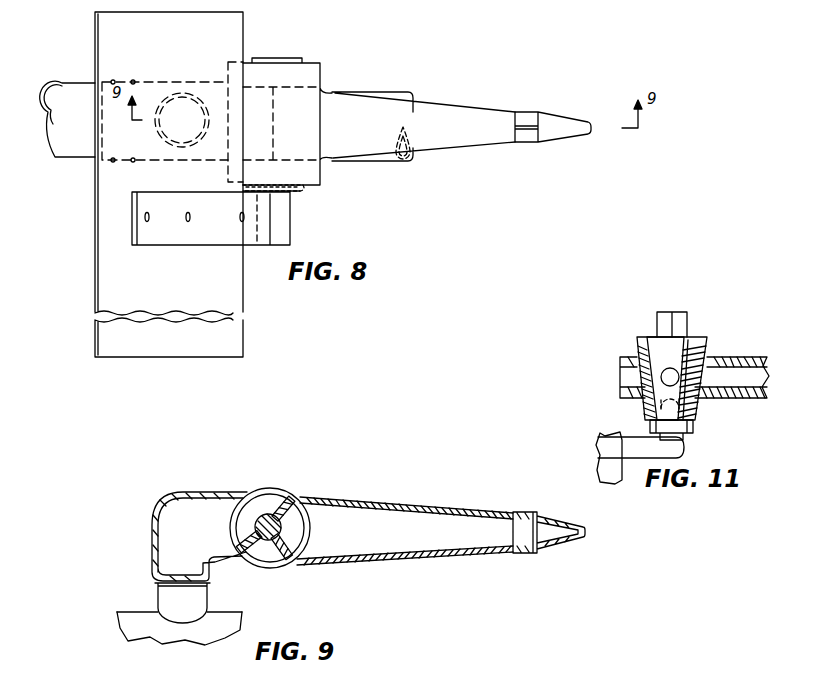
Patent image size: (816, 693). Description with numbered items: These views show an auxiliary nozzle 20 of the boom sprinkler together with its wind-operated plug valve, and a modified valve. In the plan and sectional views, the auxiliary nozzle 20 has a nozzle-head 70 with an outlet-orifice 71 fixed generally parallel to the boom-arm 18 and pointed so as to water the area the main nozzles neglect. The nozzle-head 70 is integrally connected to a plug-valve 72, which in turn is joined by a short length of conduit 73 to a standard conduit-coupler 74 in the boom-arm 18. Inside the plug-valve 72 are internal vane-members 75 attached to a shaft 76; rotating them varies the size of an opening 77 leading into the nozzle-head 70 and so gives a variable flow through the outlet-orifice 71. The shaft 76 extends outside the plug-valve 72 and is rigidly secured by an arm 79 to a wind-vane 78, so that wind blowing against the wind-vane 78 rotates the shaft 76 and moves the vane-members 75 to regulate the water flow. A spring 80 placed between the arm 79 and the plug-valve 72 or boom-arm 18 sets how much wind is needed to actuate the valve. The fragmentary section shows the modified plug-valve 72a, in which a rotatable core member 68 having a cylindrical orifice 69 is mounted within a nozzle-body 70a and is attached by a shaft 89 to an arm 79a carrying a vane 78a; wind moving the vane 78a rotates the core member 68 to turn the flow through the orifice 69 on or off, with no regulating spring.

In FIG. 8, the boom-arm 18 is at (63, 150).
In FIG. 9, the boom-arm 18 is at (130, 612).
In FIG. 8, the auxiliary nozzle 20 is at (368, 80).
In FIG. 11, the rotatable core member 68 is at (707, 348).
In FIG. 11, the cylindrical orifice 69 is at (672, 370).
In FIG. 8, the nozzle-head 70 is at (441, 108).
In FIG. 9, the nozzle-head 70 is at (413, 505).
In FIG. 11, the nozzle-body 70a is at (752, 358).
In FIG. 8, the outlet-orifice 71 is at (560, 122).
In FIG. 9, the outlet-orifice 71 is at (532, 555).
In FIG. 8, the plug-valve 72 is at (305, 80).
In FIG. 9, the plug-valve 72 is at (266, 570).
In FIG. 11, the plug-valve (modified form) 72a is at (708, 323).
In FIG. 9, the conduit 73 is at (165, 597).
In FIG. 8, the conduit-coupler 74 is at (150, 82).
In FIG. 9, the conduit-coupler 74 is at (130, 624).
In FIG. 9, the internal vane-members 75 is at (290, 500).
In FIG. 9, the shaft 76 is at (263, 516).
In FIG. 9, the opening 77 is at (300, 527).
In FIG. 8, the wind-vane 78 is at (233, 341).
In FIG. 11, the vane 78a is at (598, 470).
In FIG. 8, the arm 79 is at (214, 238).
In FIG. 11, the arm 79a is at (684, 452).
In FIG. 8, the spring 80 is at (300, 192).
In FIG. 11, the shaft 89 is at (684, 318).